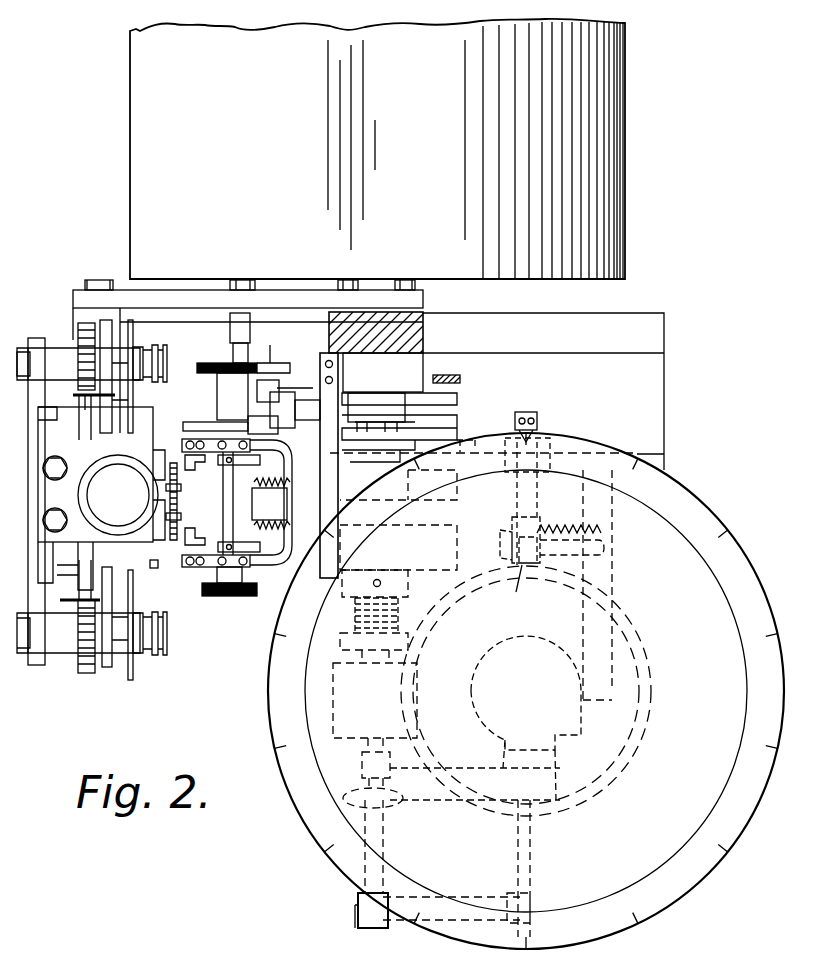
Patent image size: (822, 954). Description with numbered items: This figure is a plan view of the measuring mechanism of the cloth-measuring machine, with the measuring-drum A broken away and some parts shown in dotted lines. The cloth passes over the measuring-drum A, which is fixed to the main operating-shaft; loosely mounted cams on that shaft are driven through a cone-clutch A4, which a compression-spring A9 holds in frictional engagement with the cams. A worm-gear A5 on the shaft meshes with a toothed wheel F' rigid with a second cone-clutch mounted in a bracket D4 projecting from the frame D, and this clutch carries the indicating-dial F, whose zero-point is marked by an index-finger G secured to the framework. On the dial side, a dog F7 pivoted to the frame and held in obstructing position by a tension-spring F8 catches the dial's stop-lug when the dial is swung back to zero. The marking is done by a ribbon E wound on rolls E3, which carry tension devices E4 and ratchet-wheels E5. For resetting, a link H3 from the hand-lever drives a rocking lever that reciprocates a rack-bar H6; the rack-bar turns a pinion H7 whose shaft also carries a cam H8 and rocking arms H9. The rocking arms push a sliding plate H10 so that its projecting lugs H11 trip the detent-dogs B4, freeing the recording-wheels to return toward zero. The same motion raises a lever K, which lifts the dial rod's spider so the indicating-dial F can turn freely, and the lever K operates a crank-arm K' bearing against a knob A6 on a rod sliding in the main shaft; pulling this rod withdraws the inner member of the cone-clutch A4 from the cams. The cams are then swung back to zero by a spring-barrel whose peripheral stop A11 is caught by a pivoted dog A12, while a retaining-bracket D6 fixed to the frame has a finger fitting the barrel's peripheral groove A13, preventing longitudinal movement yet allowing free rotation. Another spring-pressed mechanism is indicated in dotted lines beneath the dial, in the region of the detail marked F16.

The measuring-drum A is at (377, 149).
The frame D is at (88, 300).
The bracket D4 is at (612, 578).
The retaining-bracket D6 is at (399, 427).
The ribbon E is at (120, 418).
The rolls E3 is at (136, 348).
The tension devices E4 is at (170, 614).
The ratchet-wheels E5 is at (80, 330).
The indicating-dial F is at (526, 691).
The toothed wheel F' is at (520, 691).
The dog F7 is at (522, 591).
The tension-spring F8 is at (548, 528).
The latch block F16 is at (500, 545).
The index-finger G is at (529, 477).
The link H3 is at (460, 379).
The rack-bar H6 is at (262, 362).
The pinion H7 is at (208, 365).
The cam H8 is at (198, 425).
The rocking arms H9 is at (255, 548).
The sliding plate H10 is at (237, 503).
The projecting lugs H11 is at (200, 488).
The cone-clutch A4 is at (458, 538).
The worm-gear A5 is at (345, 700).
The knob A6 is at (362, 795).
The compression-spring A9 is at (400, 615).
The stop A11 is at (490, 455).
The pivoted dog A12 is at (500, 440).
The peripheral groove A13 is at (300, 412).
The detent-dogs B4 is at (158, 563).
The lever K is at (535, 868).
The crank-arm K' is at (437, 864).